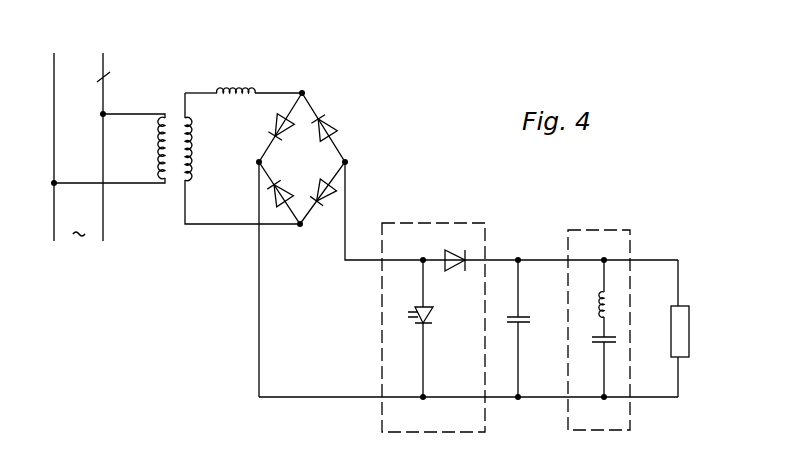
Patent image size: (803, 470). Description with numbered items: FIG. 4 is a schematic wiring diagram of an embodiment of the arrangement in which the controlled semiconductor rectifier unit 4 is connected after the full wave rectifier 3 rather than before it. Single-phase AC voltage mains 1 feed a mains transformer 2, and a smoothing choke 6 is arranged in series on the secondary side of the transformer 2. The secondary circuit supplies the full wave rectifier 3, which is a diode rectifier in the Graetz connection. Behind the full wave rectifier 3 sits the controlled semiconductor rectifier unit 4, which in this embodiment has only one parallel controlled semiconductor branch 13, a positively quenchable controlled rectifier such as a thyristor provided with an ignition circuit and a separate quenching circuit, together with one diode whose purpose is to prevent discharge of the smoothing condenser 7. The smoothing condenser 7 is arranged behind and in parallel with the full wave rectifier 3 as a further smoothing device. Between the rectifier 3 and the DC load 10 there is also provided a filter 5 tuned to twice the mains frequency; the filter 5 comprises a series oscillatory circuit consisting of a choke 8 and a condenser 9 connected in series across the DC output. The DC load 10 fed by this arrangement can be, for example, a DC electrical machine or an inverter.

The single-phase AC voltage mains 1 is at (89, 147).
The mains transformer 2 is at (175, 104).
The full wave rectifier 3 is at (310, 170).
The controlled semiconductor rectifier unit 4 is at (445, 214).
The filter 5 is at (600, 230).
The smoothing choke 6 is at (232, 86).
The smoothing condenser 7 is at (530, 320).
The choke 8 is at (612, 301).
The condenser 9 is at (616, 340).
The DC load 10 is at (689, 325).
The parallel controlled semiconductor branch 13 is at (431, 316).